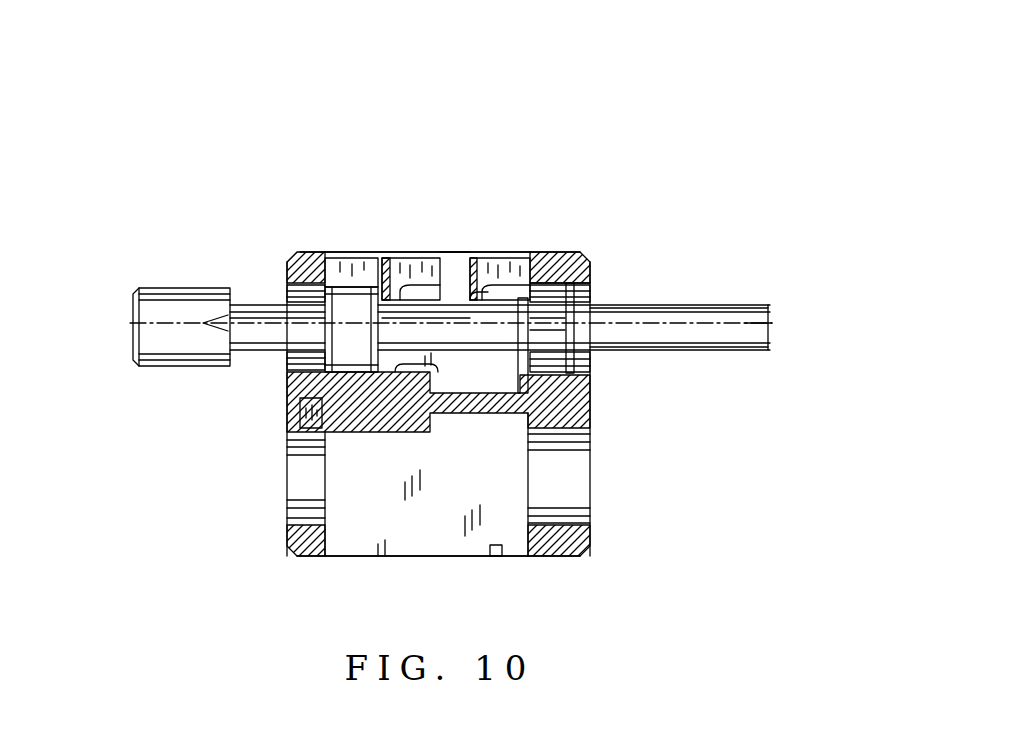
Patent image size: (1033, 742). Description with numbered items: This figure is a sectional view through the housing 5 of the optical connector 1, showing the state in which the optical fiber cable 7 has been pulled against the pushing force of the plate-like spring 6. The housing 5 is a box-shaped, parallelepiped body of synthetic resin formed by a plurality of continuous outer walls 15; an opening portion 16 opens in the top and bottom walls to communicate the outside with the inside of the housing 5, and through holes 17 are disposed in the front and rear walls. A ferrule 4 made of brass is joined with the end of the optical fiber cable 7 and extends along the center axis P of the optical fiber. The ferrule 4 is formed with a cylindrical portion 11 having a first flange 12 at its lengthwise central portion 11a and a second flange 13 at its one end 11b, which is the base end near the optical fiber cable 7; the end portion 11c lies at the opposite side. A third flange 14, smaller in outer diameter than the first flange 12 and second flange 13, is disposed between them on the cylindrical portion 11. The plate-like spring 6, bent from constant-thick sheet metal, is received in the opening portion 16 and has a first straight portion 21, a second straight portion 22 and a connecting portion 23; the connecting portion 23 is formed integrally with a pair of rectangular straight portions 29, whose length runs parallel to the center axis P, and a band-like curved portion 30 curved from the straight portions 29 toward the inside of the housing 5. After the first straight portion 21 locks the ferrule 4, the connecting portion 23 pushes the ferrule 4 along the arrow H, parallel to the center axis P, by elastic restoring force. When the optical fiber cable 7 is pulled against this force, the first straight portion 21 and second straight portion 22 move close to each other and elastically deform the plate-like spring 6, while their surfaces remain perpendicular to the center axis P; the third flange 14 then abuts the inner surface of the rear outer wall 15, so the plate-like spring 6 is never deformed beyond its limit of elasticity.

The optical connector 1 is at (478, 101).
The ferrule 4 is at (210, 289).
The housing 5 is at (601, 262).
The plate-like spring 6 is at (545, 318).
The optical fiber cable 7 is at (673, 305).
The cylindrical portion 11 is at (283, 305).
The central portion 11a is at (411, 317).
The one end 11b is at (560, 257).
The shaft end 11c is at (171, 305).
The first flange 12 is at (386, 257).
The second flange 13 is at (590, 297).
The third flange 14 is at (520, 388).
The outer walls 15 is at (322, 254).
The opening portion 16 is at (348, 257).
The through holes 17 is at (300, 303).
The first straight portion 21 is at (393, 258).
The second straight portion 22 is at (552, 256).
The connecting portion 23 is at (456, 258).
The straight portion 29 is at (330, 425).
The curved portion 30 is at (498, 251).
The arrow H is at (266, 305).
The center axis P is at (765, 321).